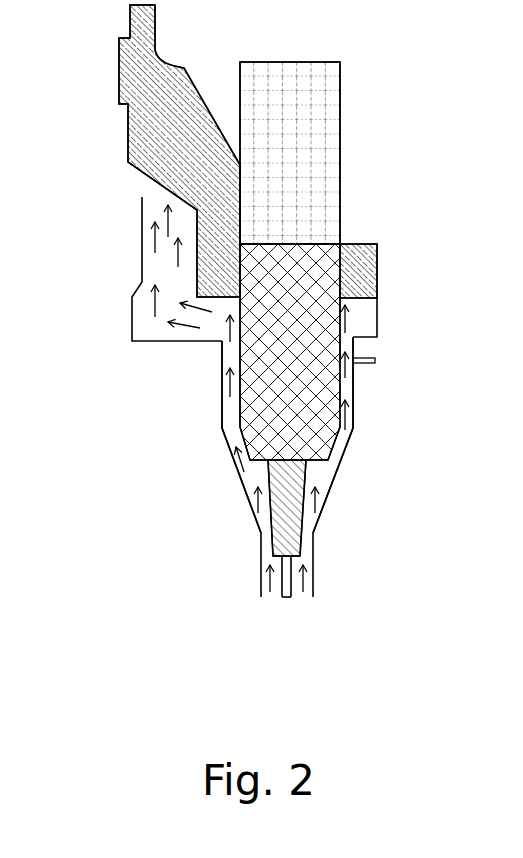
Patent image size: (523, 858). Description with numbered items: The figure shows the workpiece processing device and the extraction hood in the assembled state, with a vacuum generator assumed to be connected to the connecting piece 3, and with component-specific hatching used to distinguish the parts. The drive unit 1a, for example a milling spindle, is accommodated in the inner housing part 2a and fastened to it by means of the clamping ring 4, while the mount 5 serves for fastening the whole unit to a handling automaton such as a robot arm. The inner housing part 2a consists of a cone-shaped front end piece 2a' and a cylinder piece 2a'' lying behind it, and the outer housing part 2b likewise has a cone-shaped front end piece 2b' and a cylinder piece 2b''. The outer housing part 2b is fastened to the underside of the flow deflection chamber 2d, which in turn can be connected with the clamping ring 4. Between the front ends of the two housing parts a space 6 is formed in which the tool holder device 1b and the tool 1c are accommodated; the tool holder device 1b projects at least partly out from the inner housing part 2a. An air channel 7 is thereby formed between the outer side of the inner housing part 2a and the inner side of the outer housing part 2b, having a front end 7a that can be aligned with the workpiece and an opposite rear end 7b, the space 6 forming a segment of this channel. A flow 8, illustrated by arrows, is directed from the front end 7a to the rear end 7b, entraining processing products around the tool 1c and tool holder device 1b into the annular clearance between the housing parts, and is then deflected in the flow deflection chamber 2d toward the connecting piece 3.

The drive unit 1a is at (340, 90).
The tool holder device 1b is at (300, 540).
The tool 1c is at (277, 592).
The inner housing part 2a is at (174, 437).
The cone-shaped front end piece of inner housing part 2a' is at (202, 480).
The cylinder piece of inner housing part 2a'' is at (182, 384).
The outer housing part 2b is at (375, 435).
The cone-shaped front end piece of outer housing part 2b' is at (373, 486).
The cylinder piece of outer housing part 2b'' is at (411, 387).
The flow deflection chamber 2d is at (377, 305).
The connecting piece 3 is at (139, 228).
The clamping ring 4 is at (377, 265).
The mount 5 is at (129, 14).
The space 6 is at (268, 553).
The air channel 7 is at (233, 348).
The front end of air channel 7a is at (297, 592).
The rear end of air channel 7b is at (360, 340).
The flow 8 is at (152, 303).